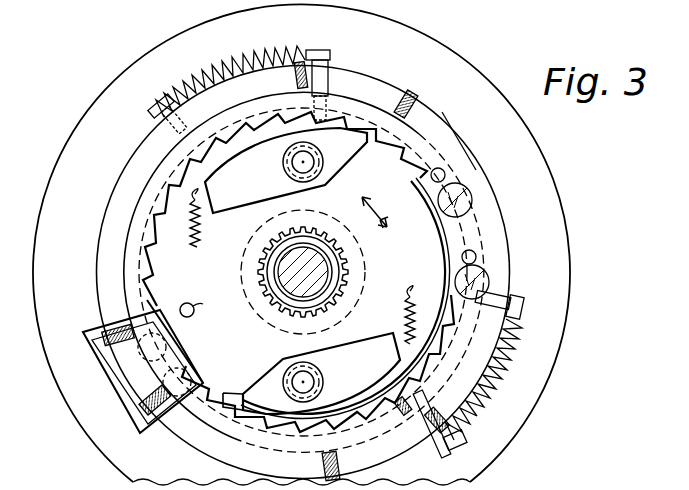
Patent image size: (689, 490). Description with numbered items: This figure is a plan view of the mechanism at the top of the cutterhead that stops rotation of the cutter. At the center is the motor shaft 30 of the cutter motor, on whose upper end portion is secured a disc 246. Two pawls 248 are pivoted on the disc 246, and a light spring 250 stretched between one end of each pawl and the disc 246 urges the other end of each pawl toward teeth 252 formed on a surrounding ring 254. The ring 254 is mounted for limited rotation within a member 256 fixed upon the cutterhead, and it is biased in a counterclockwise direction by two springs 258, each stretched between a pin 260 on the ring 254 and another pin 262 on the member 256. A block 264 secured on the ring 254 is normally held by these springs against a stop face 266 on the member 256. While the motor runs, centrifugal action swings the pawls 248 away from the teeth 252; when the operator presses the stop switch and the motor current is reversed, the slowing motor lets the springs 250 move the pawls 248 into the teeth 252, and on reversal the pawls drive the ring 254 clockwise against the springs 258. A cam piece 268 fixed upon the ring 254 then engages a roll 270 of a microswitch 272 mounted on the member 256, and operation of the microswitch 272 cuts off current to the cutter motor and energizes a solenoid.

The motor shaft 30 is at (338, 270).
The disc 246 is at (183, 212).
The pawl 248 is at (240, 197).
The spring 250 is at (195, 248).
The teeth 252 is at (366, 142).
The ring 254 is at (140, 222).
The member 256 is at (150, 140).
The spring 258 is at (238, 58).
The pin 260 is at (433, 445).
The pin 262 is at (535, 297).
The block 264 is at (470, 165).
The stop face 266 is at (445, 160).
The cam piece 268 is at (195, 333).
The roll 270 is at (200, 300).
The microswitch 272 is at (158, 310).